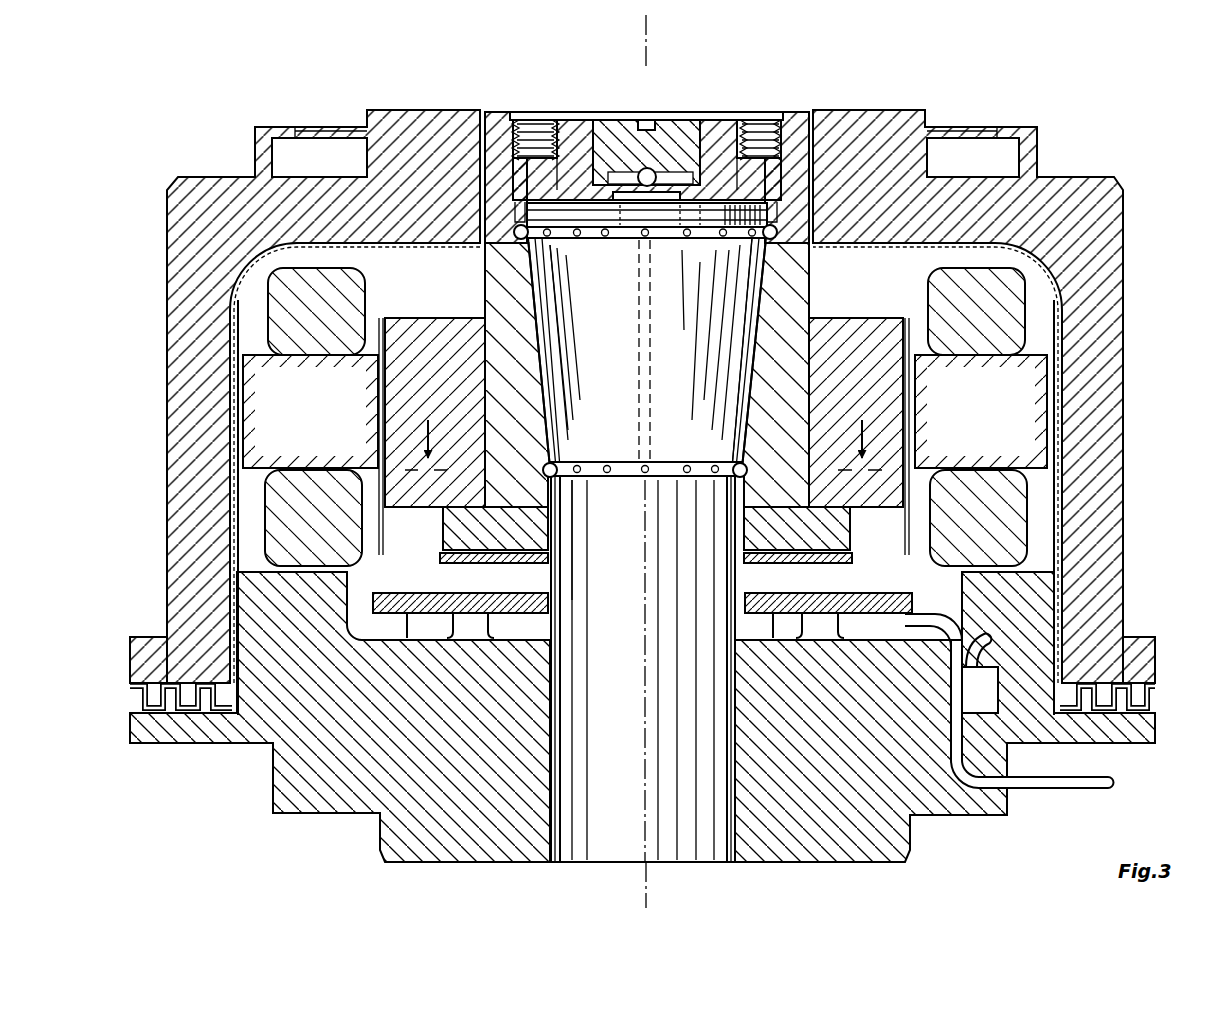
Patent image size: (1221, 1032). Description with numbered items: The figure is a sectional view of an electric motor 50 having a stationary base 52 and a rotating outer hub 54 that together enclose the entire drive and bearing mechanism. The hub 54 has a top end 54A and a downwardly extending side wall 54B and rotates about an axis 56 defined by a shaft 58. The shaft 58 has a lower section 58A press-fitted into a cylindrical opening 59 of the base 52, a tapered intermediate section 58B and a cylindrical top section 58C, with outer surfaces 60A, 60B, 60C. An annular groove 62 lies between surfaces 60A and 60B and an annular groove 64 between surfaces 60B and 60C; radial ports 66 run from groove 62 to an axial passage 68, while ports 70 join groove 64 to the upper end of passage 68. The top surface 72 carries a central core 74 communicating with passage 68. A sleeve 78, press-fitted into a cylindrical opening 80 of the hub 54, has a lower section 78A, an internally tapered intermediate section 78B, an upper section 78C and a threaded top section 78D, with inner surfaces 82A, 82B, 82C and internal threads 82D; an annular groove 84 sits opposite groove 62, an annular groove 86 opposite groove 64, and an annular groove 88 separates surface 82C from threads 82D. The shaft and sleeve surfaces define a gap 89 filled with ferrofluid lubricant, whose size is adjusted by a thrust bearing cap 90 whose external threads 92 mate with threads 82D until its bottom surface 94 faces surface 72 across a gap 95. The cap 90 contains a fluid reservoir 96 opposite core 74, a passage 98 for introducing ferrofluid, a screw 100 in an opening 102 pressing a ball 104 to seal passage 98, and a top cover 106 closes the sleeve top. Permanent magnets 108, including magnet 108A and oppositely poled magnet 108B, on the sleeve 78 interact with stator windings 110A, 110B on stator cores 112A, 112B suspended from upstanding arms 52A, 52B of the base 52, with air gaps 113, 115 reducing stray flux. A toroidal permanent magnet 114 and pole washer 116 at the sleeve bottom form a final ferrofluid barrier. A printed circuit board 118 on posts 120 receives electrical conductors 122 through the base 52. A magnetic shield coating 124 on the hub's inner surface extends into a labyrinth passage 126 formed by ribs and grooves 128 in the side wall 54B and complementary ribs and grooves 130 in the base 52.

The motor 50 is at (1160, 449).
The base 52 is at (460, 863).
The upstanding arm 52A is at (1060, 484).
The upstanding arm 52B is at (237, 482).
The outer hub 54 is at (1128, 237).
The top end 54A is at (385, 160).
The side wall 54B is at (171, 360).
The axis 56 is at (648, 46).
The shaft 58 is at (590, 864).
The lower section 58A is at (699, 787).
The tapered intermediate section 58B is at (714, 362).
The top section 58C is at (702, 236).
The cylindrical opening 59 is at (738, 752).
The surface 60A is at (722, 522).
The surface 60B is at (748, 406).
The surface 60C is at (532, 212).
The annular groove 62 is at (622, 478).
The annular groove 64 is at (598, 243).
The radial ports 66 is at (588, 463).
The axial passage 68 is at (636, 371).
The ports 70 is at (549, 239).
The top surface 72 is at (616, 240).
The central core 74 is at (722, 199).
The sleeve 78 is at (815, 281).
The lower section 78A is at (531, 498).
The intermediate section 78B is at (525, 385).
The upper section 78C is at (503, 222).
The top section 78D is at (500, 113).
The cylindrical opening 80 is at (486, 187).
The inner surface 82A is at (748, 488).
The inner surface 82B is at (744, 376).
The inner surface 82C is at (790, 222).
The internal threads 82D is at (798, 112).
The annular groove 84 is at (542, 470).
The annular groove 86 is at (777, 240).
The annular groove 88 is at (481, 206).
The gap 89 is at (529, 300).
The thrust bearing cap 90 is at (723, 117).
The external threads 92 is at (542, 160).
The bottom surface 94 is at (578, 155).
The gap 95 is at (750, 157).
The fluid reservoir 96 is at (712, 155).
The passage 98 is at (646, 152).
The screw 100 is at (654, 118).
The opening 102 is at (652, 164).
The ball 104 is at (656, 169).
The top cover 106 is at (760, 116).
The permanent magnets 108 is at (398, 510).
The magnet 108A is at (876, 318).
The magnet 108B is at (404, 318).
The stator winding 110A is at (999, 309).
The stator winding 110B is at (337, 316).
The stator core 112A is at (1003, 412).
The stator core 112B is at (338, 417).
The air gap 113 is at (378, 540).
The toroidal permanent magnet 114 is at (445, 536).
The air gap 115 is at (229, 393).
The pole washer 116 is at (474, 564).
The printed circuit board 118 is at (407, 614).
The posts 120 is at (474, 625).
The electrical conductors 122 is at (952, 728).
The magnetic shield coating 124 is at (293, 243).
The labyrinth passage 126 is at (190, 716).
The annular ribs and grooves 128 is at (184, 673).
The ribs and grooves 130 is at (145, 744).